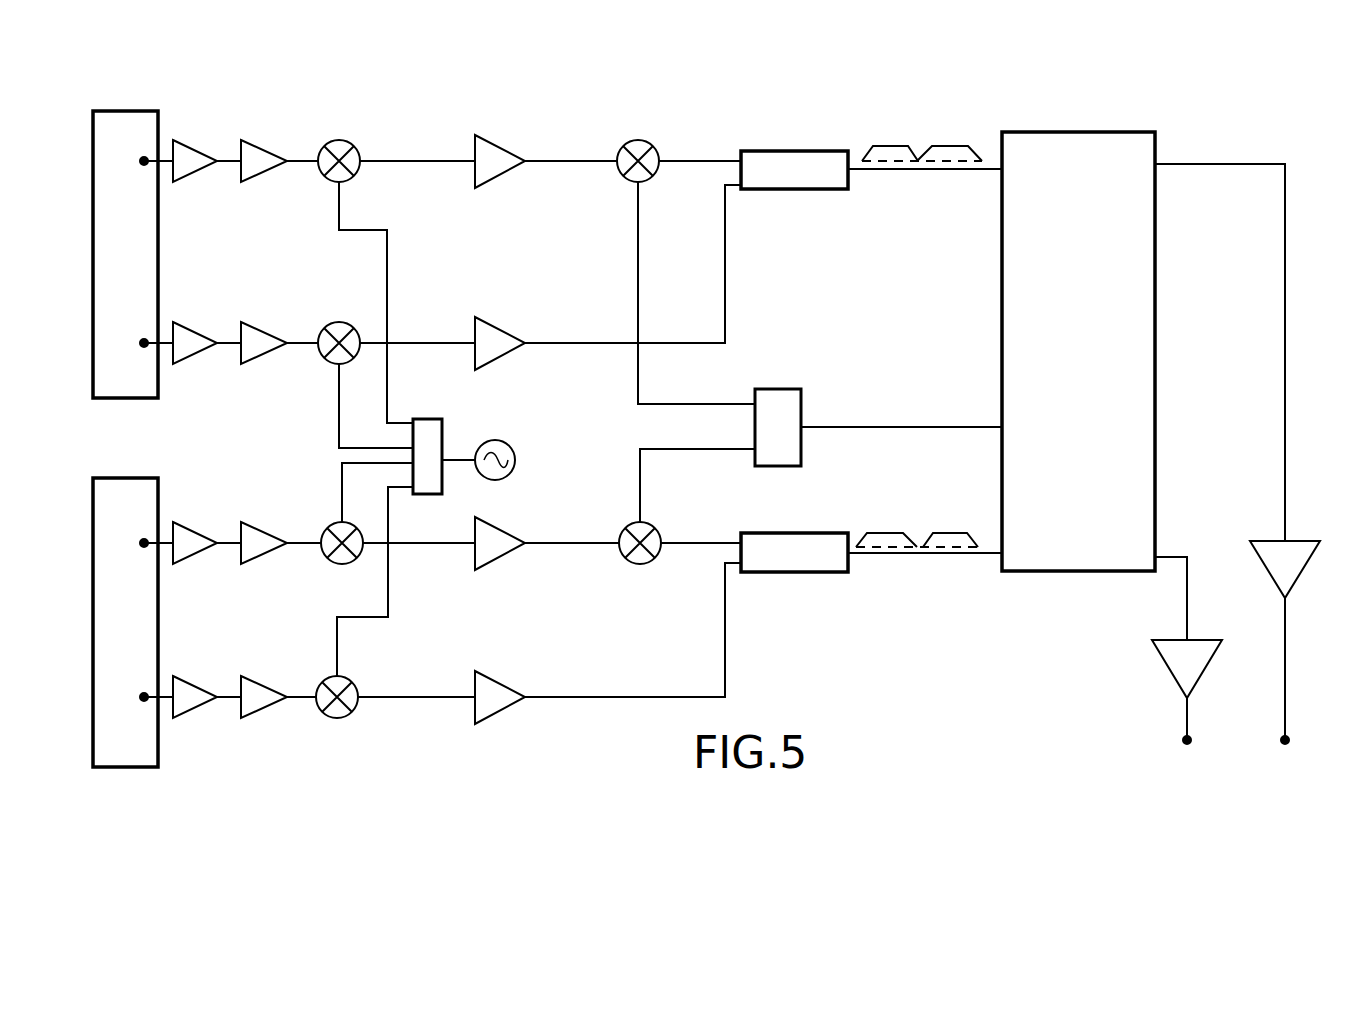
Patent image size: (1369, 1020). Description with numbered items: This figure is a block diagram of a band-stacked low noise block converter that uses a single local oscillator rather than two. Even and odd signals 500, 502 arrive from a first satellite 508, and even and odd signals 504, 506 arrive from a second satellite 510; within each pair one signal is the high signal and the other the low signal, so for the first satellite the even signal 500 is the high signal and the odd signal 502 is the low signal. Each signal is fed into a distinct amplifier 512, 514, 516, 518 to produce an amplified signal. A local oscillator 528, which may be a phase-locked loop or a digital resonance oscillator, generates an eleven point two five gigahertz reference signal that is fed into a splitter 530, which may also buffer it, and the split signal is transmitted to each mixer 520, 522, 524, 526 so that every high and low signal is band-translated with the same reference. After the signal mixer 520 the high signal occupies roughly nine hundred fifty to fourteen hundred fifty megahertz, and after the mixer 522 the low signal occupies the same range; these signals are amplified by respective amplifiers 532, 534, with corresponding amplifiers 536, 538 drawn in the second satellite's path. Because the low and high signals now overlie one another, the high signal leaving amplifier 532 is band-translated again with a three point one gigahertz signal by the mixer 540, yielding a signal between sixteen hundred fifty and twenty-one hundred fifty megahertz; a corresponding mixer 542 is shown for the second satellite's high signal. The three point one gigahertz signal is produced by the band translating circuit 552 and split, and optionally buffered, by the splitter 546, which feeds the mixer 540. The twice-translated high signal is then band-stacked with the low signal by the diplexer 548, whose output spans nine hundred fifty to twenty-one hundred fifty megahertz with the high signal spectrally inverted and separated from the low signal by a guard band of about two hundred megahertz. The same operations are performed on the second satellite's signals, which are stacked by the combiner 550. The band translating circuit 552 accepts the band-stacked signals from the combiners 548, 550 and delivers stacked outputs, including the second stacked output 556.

The even signal 500 is at (144, 161).
The odd signal 502 is at (144, 343).
The even signal 504 is at (144, 543).
The odd signal 506 is at (144, 697).
The first satellite 508 is at (93, 111).
The second satellite 510 is at (93, 478).
The amplifier 512 is at (188, 144).
The amplifier 514 is at (188, 326).
The amplifier 516 is at (188, 526).
The amplifier 518 is at (188, 680).
The signal mixer 520 is at (352, 146).
The mixer 522 is at (333, 326).
The mixer 524 is at (336, 526).
The mixer 526 is at (331, 680).
The local oscillator 528 is at (492, 441).
The splitter 530 is at (420, 419).
The amplifier 532 is at (498, 142).
The amplifier 534 is at (498, 322).
The amplifier 536 is at (498, 526).
The amplifier 538 is at (498, 680).
The mixer 540 is at (651, 146).
The mixer 542 is at (653, 528).
The splitter 546 is at (790, 389).
The diplexer 548 is at (805, 151).
The combiner 550 is at (805, 533).
The band translating circuit 552 is at (1155, 280).
The second stacked output 556 is at (1287, 541).